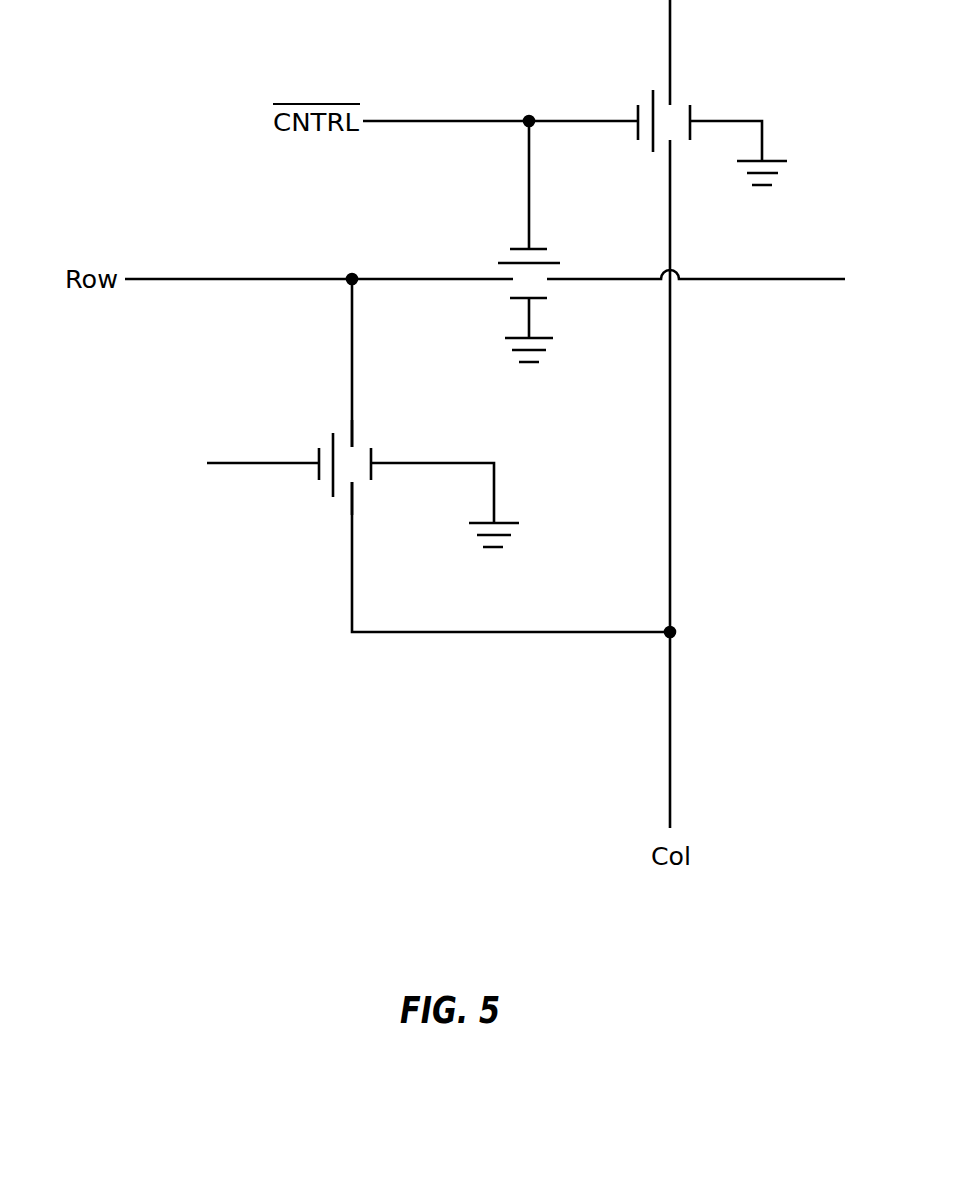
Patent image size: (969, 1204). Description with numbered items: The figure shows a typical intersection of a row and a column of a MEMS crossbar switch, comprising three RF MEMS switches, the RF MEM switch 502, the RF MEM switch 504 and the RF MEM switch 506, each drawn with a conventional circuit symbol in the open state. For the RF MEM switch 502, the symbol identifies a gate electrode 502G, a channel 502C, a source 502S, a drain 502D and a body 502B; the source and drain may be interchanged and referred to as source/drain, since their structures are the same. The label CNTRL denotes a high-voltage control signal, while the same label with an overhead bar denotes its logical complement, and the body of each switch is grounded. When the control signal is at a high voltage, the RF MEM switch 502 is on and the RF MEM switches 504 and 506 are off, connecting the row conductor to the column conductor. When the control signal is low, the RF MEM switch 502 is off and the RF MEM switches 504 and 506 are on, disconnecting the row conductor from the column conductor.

The RF MEM switch 502 is at (392, 455).
The source 502S is at (353, 422).
The gate electrode 502G is at (316, 460).
The channel 502C is at (331, 494).
The body 502B is at (445, 492).
The drain 502D is at (354, 510).
The RF MEM switch 504 is at (488, 246).
The RF MEM switch 506 is at (696, 82).